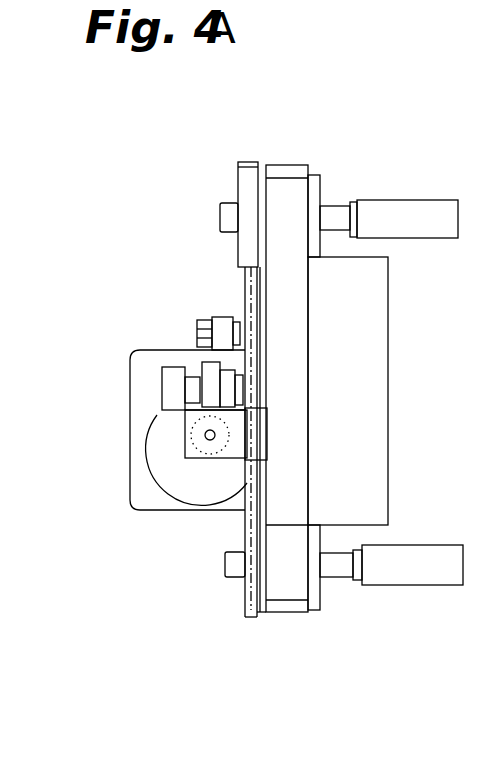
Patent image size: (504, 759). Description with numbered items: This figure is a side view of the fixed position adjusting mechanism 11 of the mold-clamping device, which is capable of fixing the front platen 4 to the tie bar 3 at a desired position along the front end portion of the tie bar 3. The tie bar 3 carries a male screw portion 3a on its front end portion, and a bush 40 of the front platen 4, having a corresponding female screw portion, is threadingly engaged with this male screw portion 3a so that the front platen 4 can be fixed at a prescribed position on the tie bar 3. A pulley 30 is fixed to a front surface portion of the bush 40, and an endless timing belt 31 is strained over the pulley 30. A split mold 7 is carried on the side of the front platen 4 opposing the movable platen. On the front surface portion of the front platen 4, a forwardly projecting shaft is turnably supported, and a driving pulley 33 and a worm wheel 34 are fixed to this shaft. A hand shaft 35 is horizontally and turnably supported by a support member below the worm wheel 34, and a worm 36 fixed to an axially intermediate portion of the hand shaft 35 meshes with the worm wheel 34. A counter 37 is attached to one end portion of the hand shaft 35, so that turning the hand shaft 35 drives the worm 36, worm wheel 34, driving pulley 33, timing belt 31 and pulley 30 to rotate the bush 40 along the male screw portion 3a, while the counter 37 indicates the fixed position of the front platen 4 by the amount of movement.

The fixed position adjusting mechanism 11 is at (203, 177).
The pulley 30 is at (259, 163).
The timing belt 31 is at (241, 286).
The front platen 4 is at (296, 178).
The bush 40 is at (378, 175).
The split mold 7 is at (362, 412).
The male screw portion 3a is at (342, 206).
The tie bar 3 is at (503, 147).
The worm 36 is at (202, 450).
The counter 37 is at (128, 355).
The driving pulley 33 is at (230, 345).
The worm wheel 34 is at (205, 362).
The hand shaft 35 is at (207, 440).